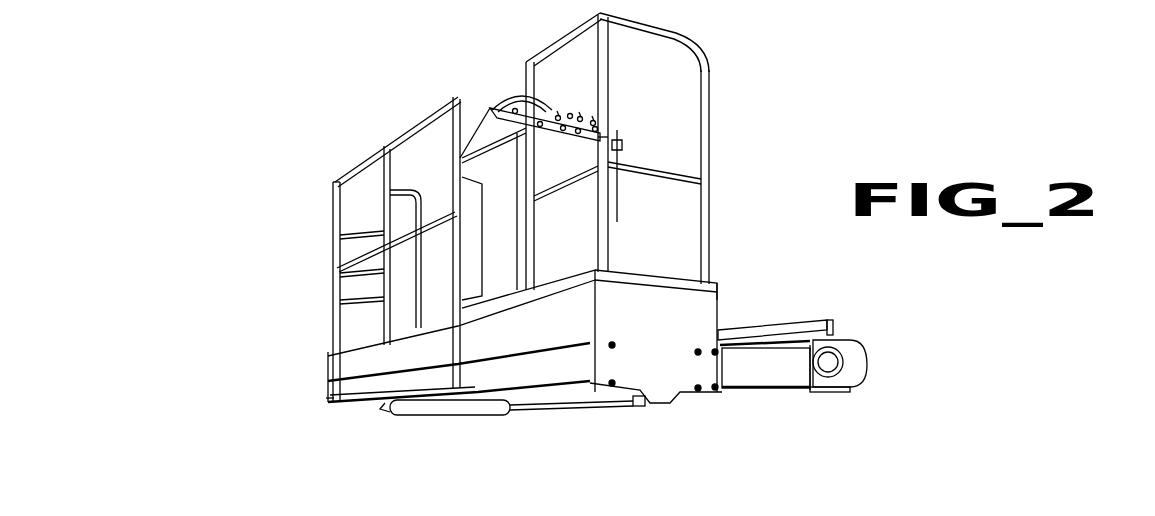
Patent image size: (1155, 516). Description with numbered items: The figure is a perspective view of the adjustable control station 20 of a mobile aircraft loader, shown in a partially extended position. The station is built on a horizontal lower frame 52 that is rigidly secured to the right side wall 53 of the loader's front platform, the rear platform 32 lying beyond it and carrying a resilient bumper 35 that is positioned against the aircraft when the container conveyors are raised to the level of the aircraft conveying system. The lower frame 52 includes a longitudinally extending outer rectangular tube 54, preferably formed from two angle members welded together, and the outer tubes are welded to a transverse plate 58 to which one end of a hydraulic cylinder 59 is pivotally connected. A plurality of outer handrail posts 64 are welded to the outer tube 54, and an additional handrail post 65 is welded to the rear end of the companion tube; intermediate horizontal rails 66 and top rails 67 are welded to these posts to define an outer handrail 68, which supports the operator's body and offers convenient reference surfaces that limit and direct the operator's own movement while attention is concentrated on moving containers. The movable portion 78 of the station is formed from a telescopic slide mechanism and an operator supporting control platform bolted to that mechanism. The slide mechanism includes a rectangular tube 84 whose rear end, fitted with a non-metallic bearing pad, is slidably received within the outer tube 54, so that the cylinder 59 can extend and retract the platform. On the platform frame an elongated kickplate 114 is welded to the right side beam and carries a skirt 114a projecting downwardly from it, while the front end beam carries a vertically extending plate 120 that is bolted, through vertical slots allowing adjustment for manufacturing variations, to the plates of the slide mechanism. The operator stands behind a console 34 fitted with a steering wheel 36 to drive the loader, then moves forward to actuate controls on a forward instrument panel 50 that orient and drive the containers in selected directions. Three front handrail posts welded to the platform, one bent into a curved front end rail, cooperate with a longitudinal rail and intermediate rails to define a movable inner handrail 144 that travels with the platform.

The adjustable control station 20 is at (732, 78).
The rear platform 32 is at (847, 337).
The console 34 is at (618, 144).
The resilient bumper 35 is at (860, 360).
The steering wheel 36 is at (520, 104).
The forward instrument panel 50 is at (580, 118).
The horizontal lower frame 52 is at (326, 383).
The right side wall 53 is at (750, 383).
The outer rectangular tube 54 is at (328, 398).
The transverse plate 58 is at (385, 408).
The hydraulic cylinder 59 is at (503, 407).
The outer handrail posts 64 is at (456, 94).
The additional handrail post 65 is at (430, 197).
The intermediate horizontal rails 66 is at (345, 235).
The top rails 67 is at (345, 178).
The outer handrail 68 is at (376, 148).
The movable portion 78 is at (720, 283).
The rectangular tube 84 is at (575, 364).
The elongated kickplate 114 is at (561, 280).
The skirt 114a is at (590, 330).
The vertically extending plate 120 is at (710, 323).
The movable inner handrail 144 is at (711, 135).